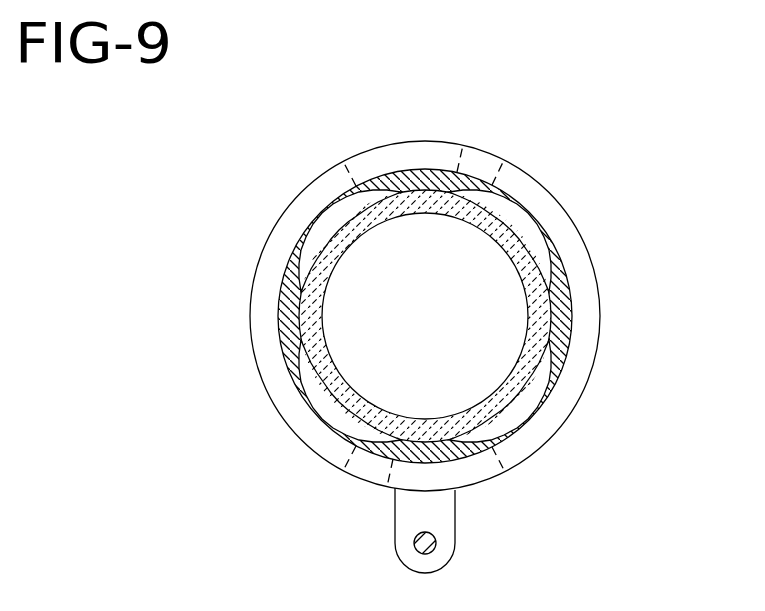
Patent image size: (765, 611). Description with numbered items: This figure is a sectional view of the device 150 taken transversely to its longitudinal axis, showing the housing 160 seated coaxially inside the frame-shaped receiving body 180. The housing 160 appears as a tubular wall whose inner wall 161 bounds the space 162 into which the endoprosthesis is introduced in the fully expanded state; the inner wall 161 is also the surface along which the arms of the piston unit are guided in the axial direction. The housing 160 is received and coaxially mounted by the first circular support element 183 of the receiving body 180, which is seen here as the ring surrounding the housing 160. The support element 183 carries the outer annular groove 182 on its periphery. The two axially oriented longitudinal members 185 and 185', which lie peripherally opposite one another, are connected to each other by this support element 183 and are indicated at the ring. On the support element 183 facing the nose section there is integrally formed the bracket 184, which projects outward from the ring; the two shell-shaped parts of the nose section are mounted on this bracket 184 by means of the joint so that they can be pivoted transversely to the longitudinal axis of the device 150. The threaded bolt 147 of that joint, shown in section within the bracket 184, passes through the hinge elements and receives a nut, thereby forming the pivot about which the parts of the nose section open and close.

The device 150 is at (167, 262).
The housing 160 is at (467, 373).
The inner wall 161 is at (357, 240).
The space 162 is at (493, 337).
The receiving body 180 is at (259, 194).
The outer annular groove 182 is at (265, 334).
The first circular support element 183 is at (270, 396).
The bracket 184 is at (457, 513).
The longitudinal member 185 is at (501, 149).
The longitudinal member 185' is at (351, 482).
The threaded bolt 147 is at (436, 543).